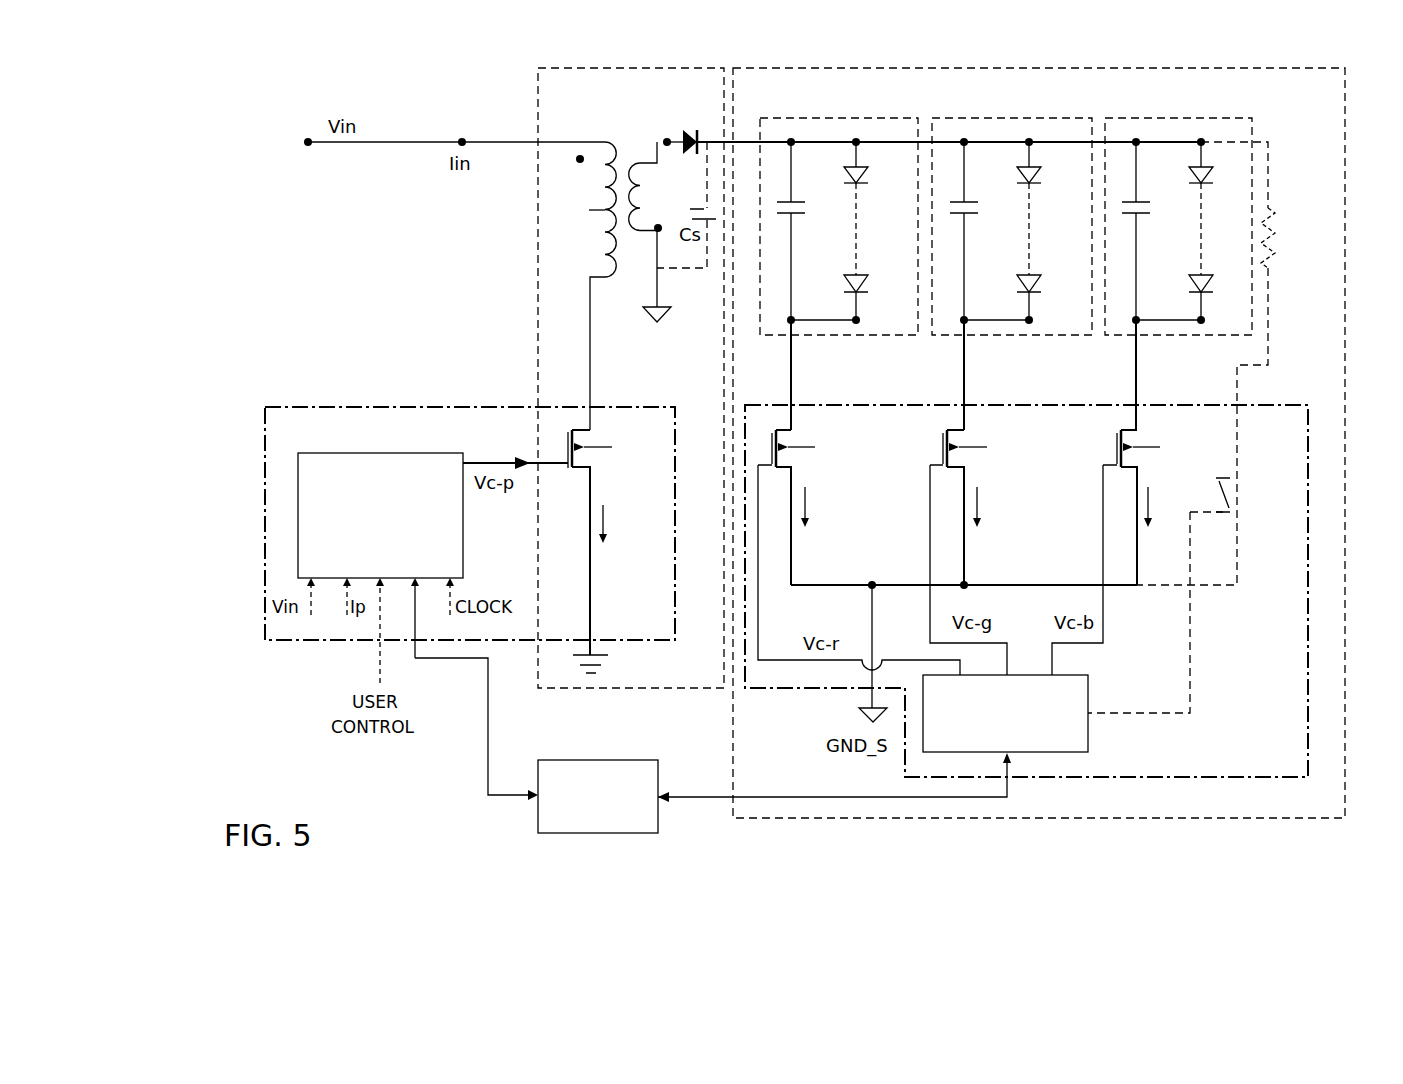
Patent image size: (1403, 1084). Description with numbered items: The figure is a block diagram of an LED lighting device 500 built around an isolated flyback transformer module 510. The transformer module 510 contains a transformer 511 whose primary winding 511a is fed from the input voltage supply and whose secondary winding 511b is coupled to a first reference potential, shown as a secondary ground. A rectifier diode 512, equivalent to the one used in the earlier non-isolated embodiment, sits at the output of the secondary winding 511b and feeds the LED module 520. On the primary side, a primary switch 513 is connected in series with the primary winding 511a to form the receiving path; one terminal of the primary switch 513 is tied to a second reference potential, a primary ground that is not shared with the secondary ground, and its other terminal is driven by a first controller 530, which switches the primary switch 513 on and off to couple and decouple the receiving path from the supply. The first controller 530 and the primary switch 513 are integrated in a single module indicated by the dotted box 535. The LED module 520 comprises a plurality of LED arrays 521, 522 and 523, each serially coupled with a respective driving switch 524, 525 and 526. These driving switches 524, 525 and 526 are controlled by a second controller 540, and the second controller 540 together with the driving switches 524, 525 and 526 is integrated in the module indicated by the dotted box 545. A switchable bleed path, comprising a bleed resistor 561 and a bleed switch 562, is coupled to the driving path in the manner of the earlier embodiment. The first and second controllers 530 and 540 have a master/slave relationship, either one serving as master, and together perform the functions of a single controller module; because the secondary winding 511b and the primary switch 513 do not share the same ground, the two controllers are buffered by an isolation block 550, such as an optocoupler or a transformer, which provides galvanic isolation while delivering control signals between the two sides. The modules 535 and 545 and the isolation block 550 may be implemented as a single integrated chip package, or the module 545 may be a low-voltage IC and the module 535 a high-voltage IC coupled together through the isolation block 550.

The LED lighting device 500 is at (254, 110).
The isolated flyback transformer module 510 is at (537, 74).
The transformer 511 is at (625, 252).
The primary winding 511a is at (605, 236).
The secondary winding 511b is at (636, 187).
The output diode 512 is at (686, 130).
The primary switch 513 is at (607, 450).
The LED load stage 520 is at (770, 68).
The LED array 521 is at (860, 118).
The LED array 522 is at (1035, 118).
The LED array 523 is at (1180, 118).
The driving switch 524 is at (800, 453).
The driving switch 525 is at (972, 453).
The driving switch 526 is at (1145, 453).
The first controller 530 is at (364, 540).
The dotted box 535 is at (329, 405).
The second controller 540 is at (989, 737).
The dotted box 545 is at (1283, 404).
The isolation block 550 is at (582, 821).
The bleed resistor 561 is at (1274, 212).
The bleed switch 562 is at (1236, 494).